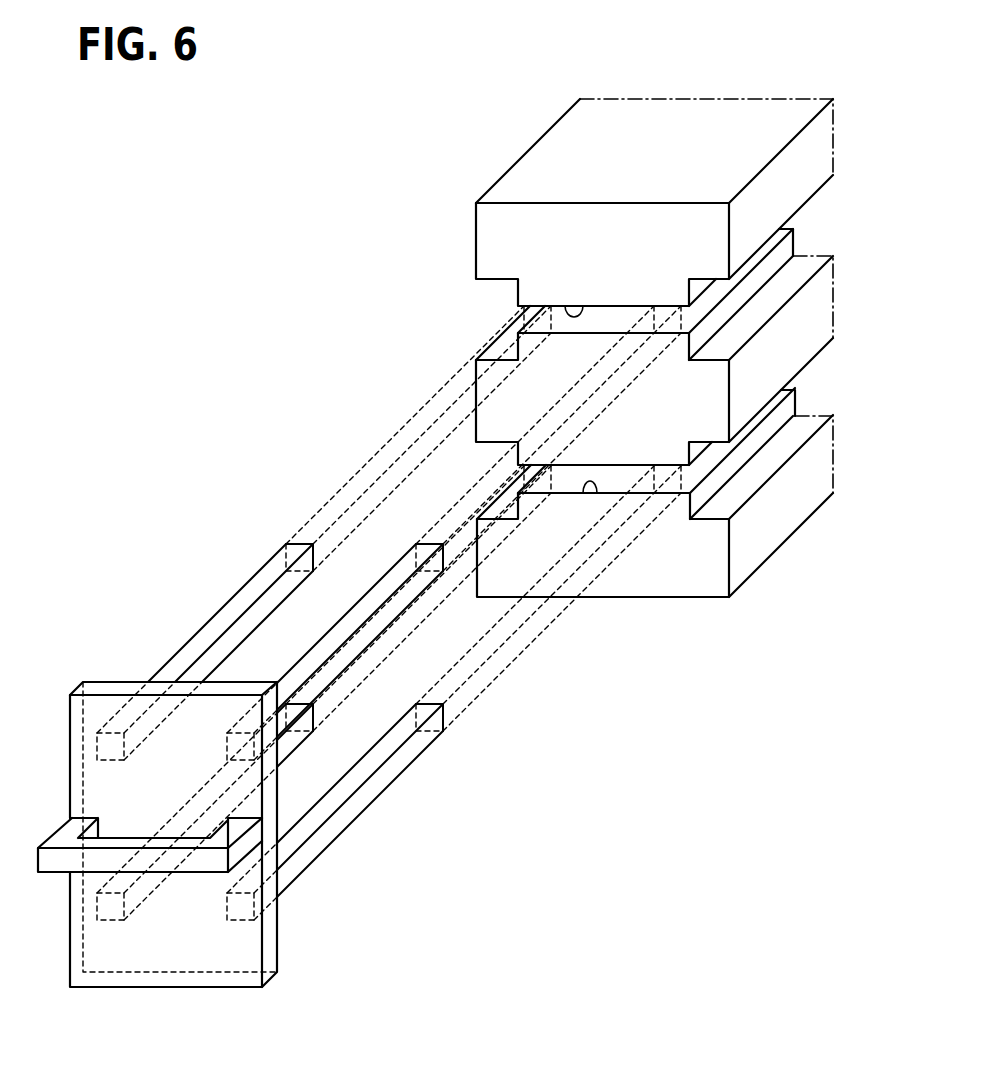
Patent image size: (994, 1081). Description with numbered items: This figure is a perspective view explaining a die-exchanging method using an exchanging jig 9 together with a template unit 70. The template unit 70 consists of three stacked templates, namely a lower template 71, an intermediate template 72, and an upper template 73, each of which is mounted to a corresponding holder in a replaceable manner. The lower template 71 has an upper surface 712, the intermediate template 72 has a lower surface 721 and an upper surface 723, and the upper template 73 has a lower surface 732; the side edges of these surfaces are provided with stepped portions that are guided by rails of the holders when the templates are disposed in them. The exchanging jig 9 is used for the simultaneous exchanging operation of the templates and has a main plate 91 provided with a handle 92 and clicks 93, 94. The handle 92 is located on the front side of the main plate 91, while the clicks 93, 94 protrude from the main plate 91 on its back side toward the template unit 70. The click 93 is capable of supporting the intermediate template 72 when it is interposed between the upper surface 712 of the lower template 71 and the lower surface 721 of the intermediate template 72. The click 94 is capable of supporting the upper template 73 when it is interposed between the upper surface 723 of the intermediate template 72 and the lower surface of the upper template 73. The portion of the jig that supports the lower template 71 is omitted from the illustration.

The template unit 70 is at (603, 372).
The upper template 73 is at (622, 199).
The lower surface 732 is at (565, 306).
The intermediate template 72 is at (603, 355).
The upper surface 723 is at (612, 333).
The lower surface 721 is at (632, 467).
The lower template 71 is at (655, 534).
The upper surface 712 is at (590, 493).
The exchanging jig 9 is at (359, 646).
The main plate 91 is at (102, 788).
The handle 92 is at (63, 866).
The click 93 is at (290, 742).
The click 94 is at (260, 587).